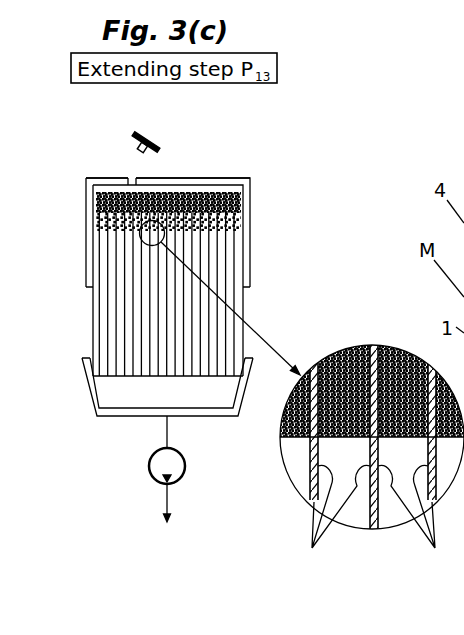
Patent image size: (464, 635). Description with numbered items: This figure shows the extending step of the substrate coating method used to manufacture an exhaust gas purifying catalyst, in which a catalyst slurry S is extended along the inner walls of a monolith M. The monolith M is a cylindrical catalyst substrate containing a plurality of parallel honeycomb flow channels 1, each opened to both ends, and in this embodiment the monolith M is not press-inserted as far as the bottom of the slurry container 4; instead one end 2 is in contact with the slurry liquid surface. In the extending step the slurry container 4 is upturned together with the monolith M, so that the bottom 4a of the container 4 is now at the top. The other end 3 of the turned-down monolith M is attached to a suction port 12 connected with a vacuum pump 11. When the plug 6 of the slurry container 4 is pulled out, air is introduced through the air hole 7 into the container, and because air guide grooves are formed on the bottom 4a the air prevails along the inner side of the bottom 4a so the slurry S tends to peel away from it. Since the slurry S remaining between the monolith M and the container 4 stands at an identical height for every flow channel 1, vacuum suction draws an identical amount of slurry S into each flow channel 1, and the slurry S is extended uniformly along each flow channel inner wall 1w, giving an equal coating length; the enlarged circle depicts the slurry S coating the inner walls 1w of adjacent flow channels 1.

The honeycomb flow channel 1 is at (214, 362).
The flow channel inner wall 1w is at (372, 521).
The one end of the monolith 2 is at (237, 202).
The other end of the monolith 3 is at (157, 376).
The slurry container 4 is at (86, 254).
The bottom of the slurry container 4a is at (190, 177).
The plug 6 is at (157, 138).
The air hole 7 is at (132, 180).
The vacuum pump 11 is at (151, 480).
The suction port 12 is at (128, 417).
The monolith M is at (254, 297).
The catalyst slurry S is at (93, 202).